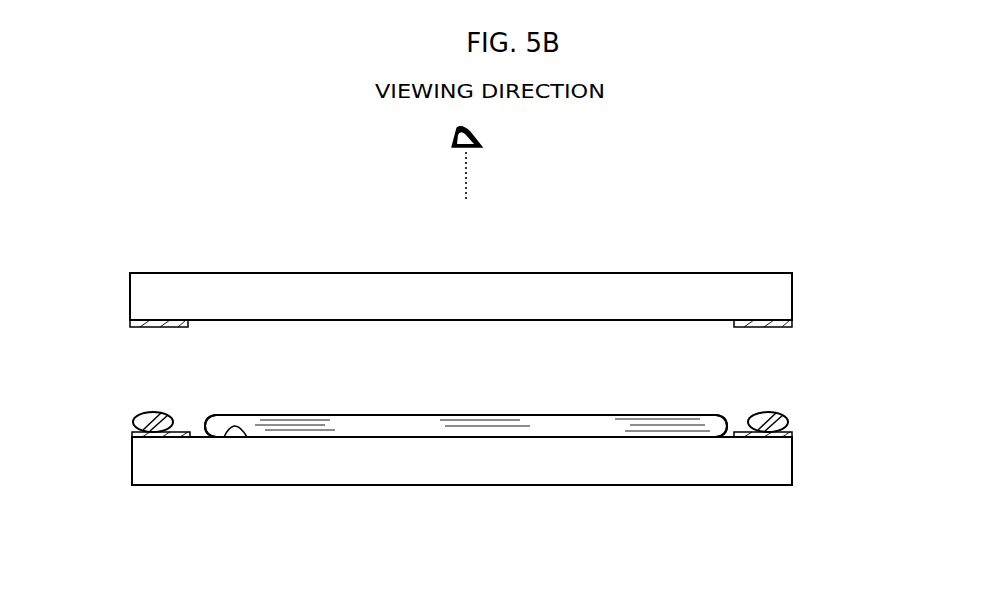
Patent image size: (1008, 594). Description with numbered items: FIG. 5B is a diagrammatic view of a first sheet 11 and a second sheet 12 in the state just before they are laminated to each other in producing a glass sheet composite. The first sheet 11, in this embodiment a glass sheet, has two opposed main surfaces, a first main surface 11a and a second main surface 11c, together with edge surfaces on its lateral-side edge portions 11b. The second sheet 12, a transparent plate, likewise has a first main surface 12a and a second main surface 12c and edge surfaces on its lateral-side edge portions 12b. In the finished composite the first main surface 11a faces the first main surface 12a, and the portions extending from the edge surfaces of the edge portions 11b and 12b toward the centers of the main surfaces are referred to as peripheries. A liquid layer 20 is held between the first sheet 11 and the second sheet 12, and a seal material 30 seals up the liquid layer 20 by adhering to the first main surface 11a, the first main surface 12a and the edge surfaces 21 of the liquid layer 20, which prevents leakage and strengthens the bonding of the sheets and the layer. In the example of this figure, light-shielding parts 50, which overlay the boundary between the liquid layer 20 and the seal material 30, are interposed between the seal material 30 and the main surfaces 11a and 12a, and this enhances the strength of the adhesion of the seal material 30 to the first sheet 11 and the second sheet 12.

The first sheet 11 is at (378, 467).
The first main surface 11a is at (243, 432).
The lateral-side edge portions 11b is at (795, 467).
The second main surface 11c is at (672, 486).
The second sheet 12 is at (442, 297).
The first main surface 12a is at (275, 320).
The lateral-side edge portions 12b is at (793, 291).
The second main surface 12c is at (586, 273).
The liquid layer 20 is at (585, 425).
The edge surfaces 21 is at (188, 418).
The seal material 30 is at (150, 411).
The light-shielding part 50 is at (140, 328).